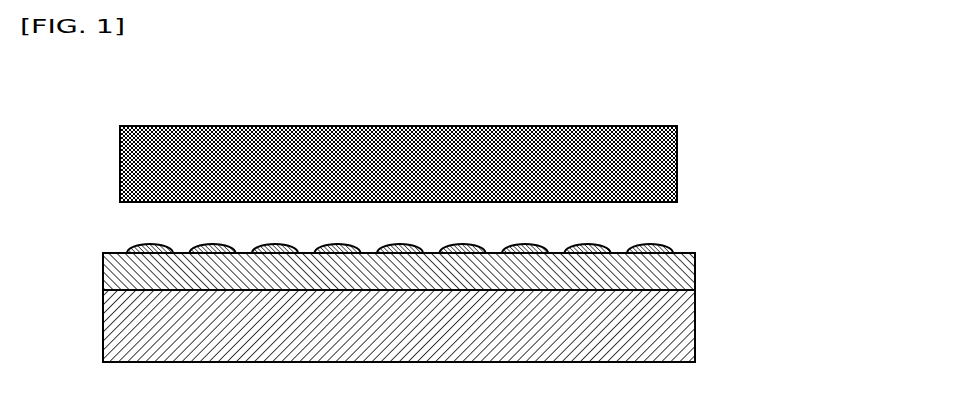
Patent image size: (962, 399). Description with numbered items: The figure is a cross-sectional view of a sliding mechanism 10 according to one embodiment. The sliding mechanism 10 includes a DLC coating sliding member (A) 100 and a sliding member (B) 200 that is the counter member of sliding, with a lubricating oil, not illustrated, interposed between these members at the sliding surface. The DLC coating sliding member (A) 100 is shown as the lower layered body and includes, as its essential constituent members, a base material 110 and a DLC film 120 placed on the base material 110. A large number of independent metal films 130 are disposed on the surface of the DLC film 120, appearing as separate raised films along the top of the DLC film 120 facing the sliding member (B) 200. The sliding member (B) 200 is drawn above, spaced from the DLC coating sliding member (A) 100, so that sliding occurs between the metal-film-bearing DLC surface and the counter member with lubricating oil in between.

The sliding mechanism 10 is at (77, 88).
The DLC coating sliding member (A) 100 is at (517, 285).
The base material 110 is at (695, 332).
The DLC film 120 is at (695, 280).
The independent metal films 130 is at (650, 246).
The sliding member (B) 200 is at (677, 134).